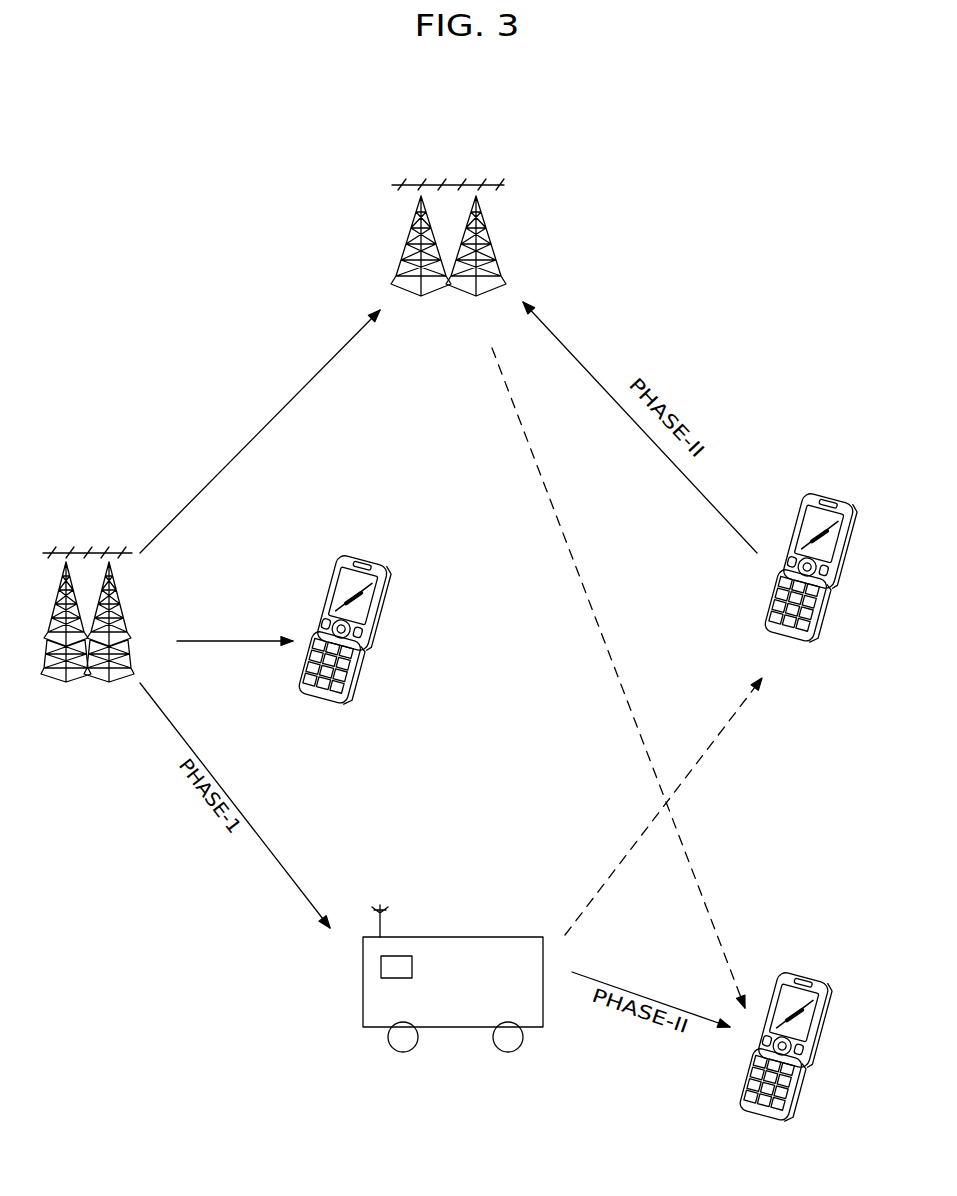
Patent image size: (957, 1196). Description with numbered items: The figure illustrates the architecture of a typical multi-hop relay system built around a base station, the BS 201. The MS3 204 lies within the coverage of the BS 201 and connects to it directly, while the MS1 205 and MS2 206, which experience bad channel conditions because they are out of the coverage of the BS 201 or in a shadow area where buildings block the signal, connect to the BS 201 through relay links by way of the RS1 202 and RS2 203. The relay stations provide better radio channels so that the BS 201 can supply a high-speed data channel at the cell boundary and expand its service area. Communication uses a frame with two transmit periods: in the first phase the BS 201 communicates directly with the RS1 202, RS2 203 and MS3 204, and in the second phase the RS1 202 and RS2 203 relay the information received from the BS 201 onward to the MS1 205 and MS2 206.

The BS 201 is at (87, 629).
The RS1 202 is at (448, 255).
The RS2 203 is at (453, 1002).
The MS3 204 is at (338, 646).
The MS1 205 is at (803, 581).
The MS2 206 is at (779, 1062).